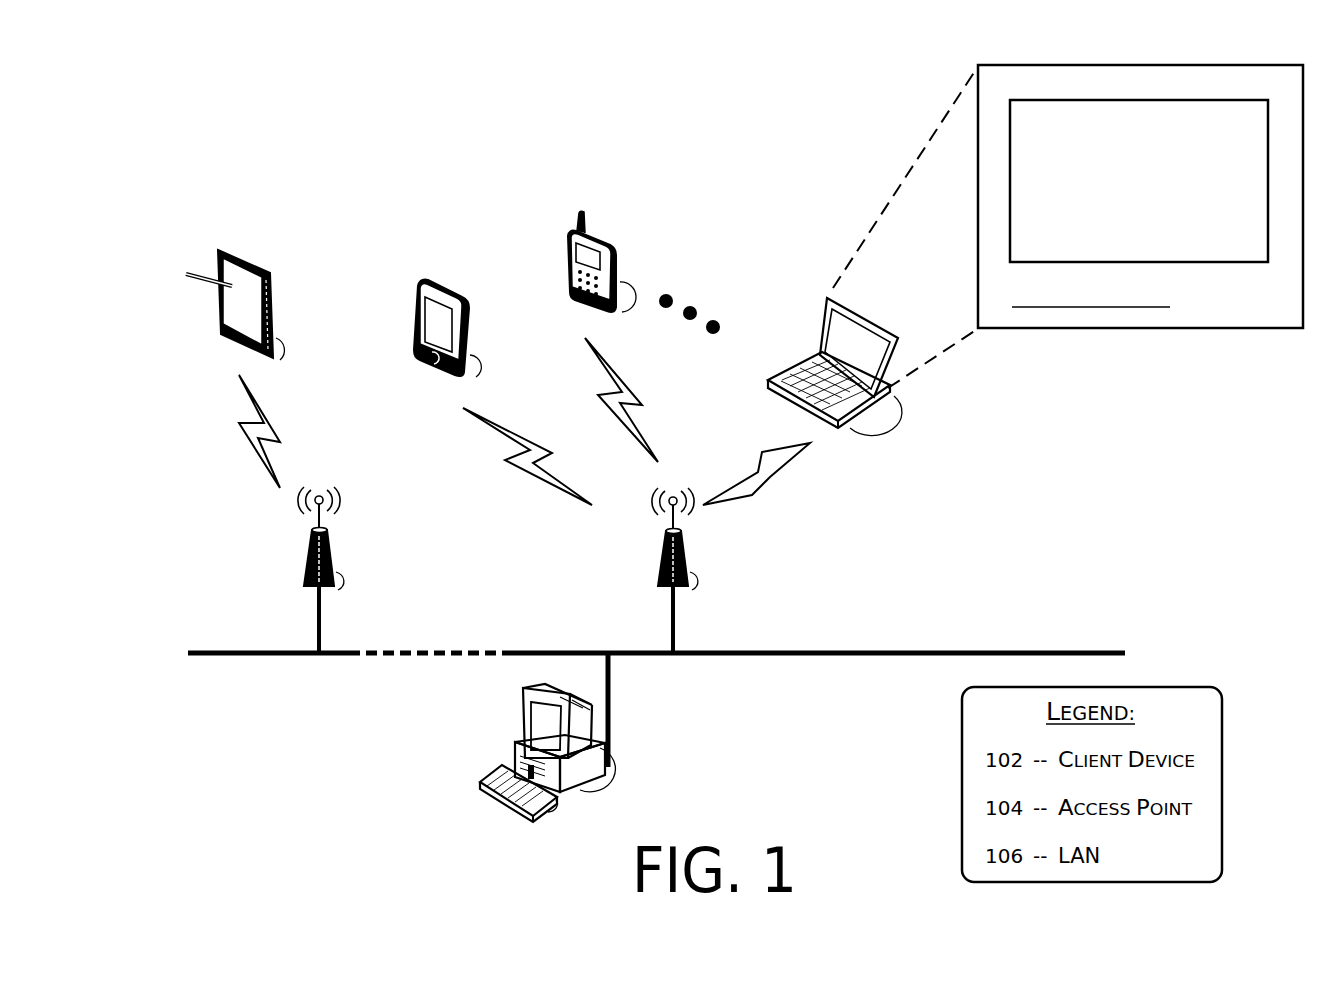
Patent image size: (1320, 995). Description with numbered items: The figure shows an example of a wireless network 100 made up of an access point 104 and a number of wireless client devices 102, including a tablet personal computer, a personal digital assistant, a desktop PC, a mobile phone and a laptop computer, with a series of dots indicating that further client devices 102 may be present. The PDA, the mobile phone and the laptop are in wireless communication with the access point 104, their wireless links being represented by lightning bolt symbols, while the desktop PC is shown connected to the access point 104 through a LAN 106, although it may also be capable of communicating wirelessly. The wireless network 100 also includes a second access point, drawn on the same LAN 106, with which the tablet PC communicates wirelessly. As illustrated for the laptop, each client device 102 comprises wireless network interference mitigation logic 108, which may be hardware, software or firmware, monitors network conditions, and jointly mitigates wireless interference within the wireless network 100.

The wireless network 100 is at (308, 79).
The client device 102 is at (1273, 307).
The access point 104 is at (692, 580).
The LAN 106 is at (721, 655).
The wireless network interference mitigation logic 108 is at (1158, 248).